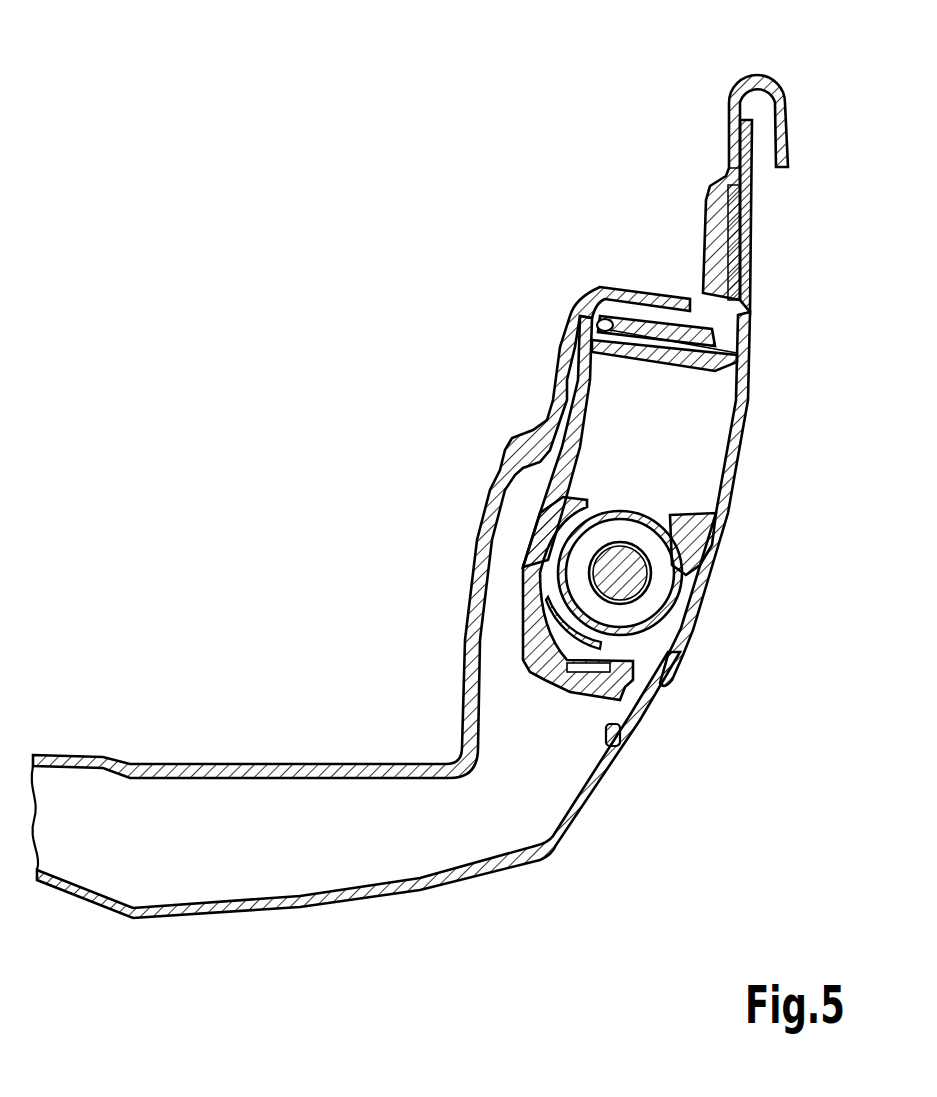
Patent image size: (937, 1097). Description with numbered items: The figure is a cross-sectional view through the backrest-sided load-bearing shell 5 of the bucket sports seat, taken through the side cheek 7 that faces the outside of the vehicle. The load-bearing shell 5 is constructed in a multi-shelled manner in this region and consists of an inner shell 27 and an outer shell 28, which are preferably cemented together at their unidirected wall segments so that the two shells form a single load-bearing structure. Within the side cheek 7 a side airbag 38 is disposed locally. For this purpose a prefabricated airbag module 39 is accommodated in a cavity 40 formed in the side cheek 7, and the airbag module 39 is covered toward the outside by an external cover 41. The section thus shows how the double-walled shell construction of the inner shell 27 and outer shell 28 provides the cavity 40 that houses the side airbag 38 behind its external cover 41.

The backrest-sided load-bearing shell 5 is at (806, 106).
The side cheek 7 is at (768, 402).
The inner shell 27 is at (393, 767).
The outer shell 28 is at (543, 852).
The side airbag 38 is at (730, 568).
The airbag module 39 is at (690, 482).
The cavity 40 is at (692, 404).
The external cover 41 is at (698, 612).